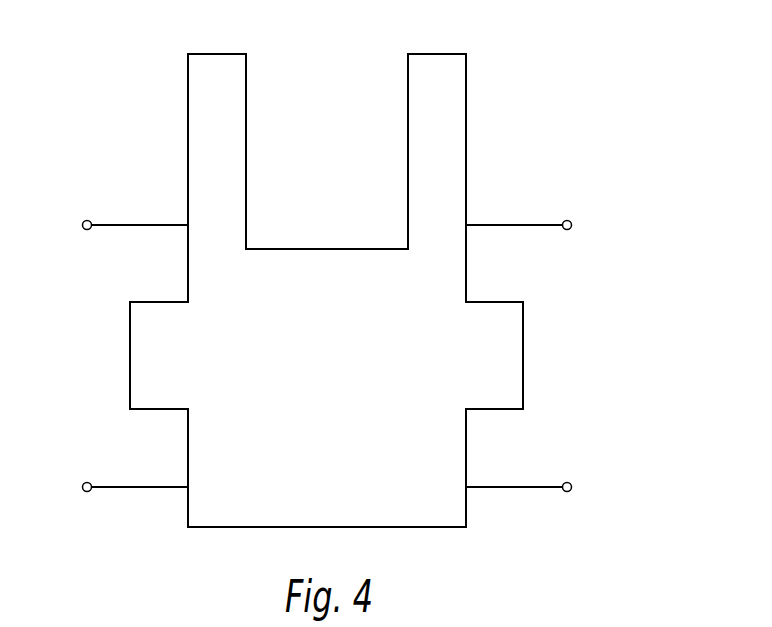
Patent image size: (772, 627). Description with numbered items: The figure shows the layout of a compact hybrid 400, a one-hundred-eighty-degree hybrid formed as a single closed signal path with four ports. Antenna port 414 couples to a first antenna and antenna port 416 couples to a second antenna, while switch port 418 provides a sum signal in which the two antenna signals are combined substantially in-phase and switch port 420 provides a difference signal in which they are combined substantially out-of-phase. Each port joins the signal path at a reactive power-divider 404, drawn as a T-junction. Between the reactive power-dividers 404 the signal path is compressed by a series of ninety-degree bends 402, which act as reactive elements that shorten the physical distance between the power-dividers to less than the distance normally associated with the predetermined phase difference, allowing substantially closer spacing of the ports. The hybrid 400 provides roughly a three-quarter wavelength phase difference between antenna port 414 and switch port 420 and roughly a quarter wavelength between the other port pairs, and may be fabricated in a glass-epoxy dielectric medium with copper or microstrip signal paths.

The compact hybrid 400 is at (683, 44).
The 90-degree bends 402 is at (188, 54).
The reactive power-dividers 404 is at (188, 225).
The antenna port 414 is at (573, 225).
The antenna port 416 is at (80, 487).
The switch port 418 is at (573, 487).
The switch port 420 is at (80, 225).